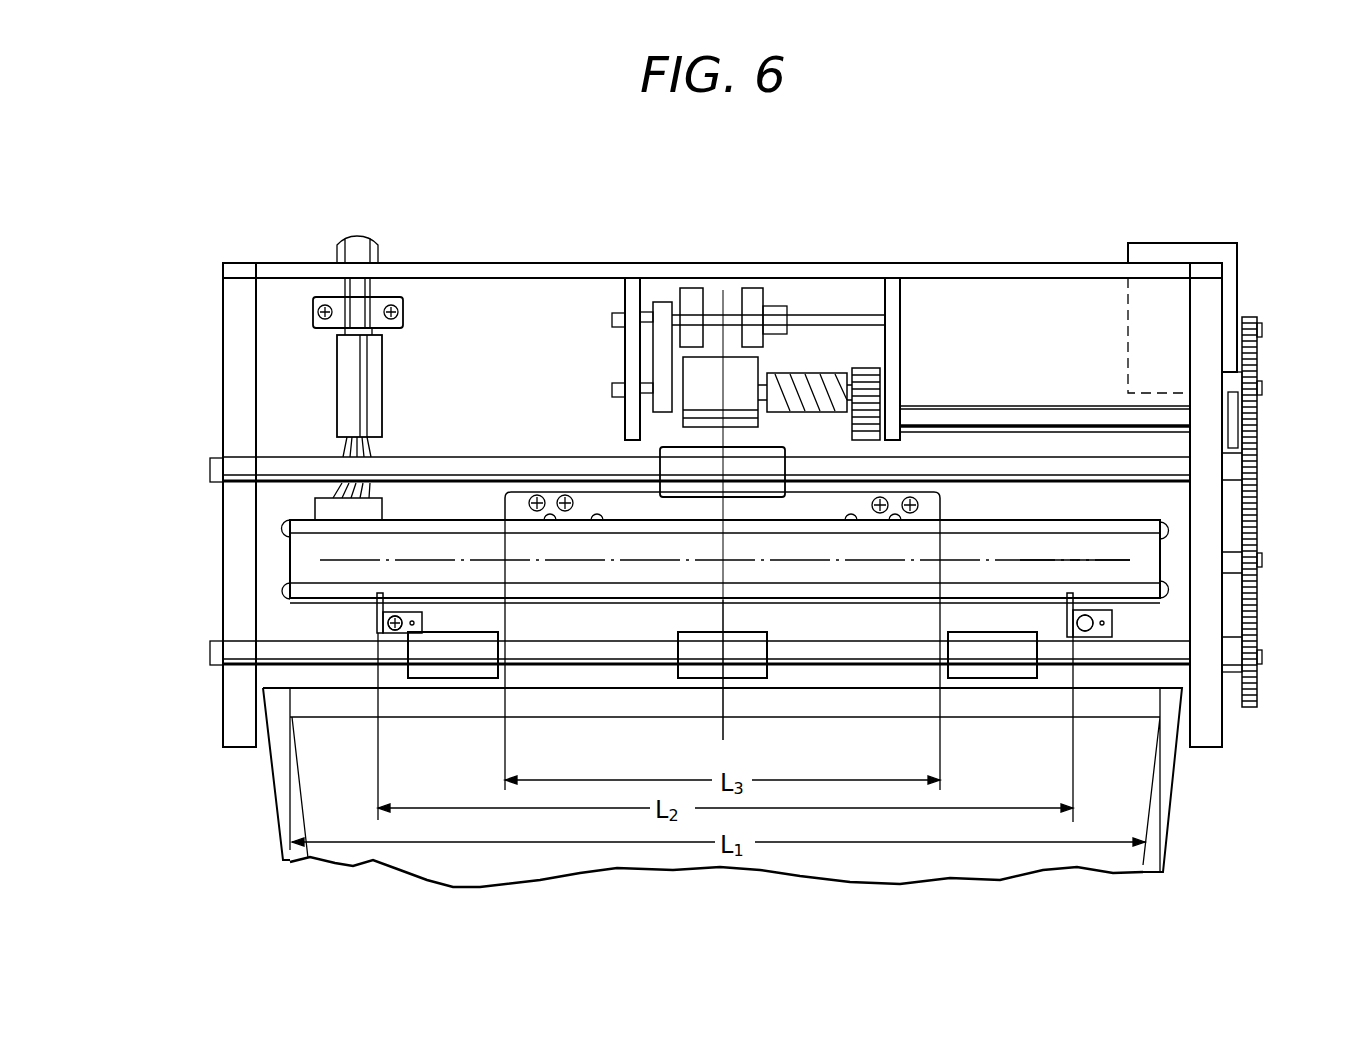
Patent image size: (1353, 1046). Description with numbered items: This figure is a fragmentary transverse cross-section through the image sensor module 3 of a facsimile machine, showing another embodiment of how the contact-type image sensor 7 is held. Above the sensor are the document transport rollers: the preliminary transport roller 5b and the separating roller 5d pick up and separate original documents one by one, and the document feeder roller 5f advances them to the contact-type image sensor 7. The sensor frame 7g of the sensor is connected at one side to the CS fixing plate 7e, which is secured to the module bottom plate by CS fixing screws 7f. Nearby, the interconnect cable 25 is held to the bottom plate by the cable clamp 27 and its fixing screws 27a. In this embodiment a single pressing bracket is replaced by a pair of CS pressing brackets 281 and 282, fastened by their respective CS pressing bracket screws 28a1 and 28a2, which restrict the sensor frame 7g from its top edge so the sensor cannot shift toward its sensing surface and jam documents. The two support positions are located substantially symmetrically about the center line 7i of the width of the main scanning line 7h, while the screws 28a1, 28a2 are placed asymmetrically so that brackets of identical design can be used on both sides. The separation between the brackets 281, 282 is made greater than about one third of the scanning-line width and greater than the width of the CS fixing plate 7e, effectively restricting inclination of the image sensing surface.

The image sensor module 3 is at (1058, 312).
The preliminary transport roller 5b is at (693, 292).
The separating roller 5d is at (710, 382).
The document feeder roller 5f is at (770, 452).
The contact-type image sensor 7 is at (297, 548).
The CS fixing plate 7e is at (605, 500).
The CS fixing screws 7f is at (565, 496).
The sensor frame 7g is at (348, 597).
The main scanning line 7h is at (1020, 560).
The center line 7i is at (730, 737).
The interconnect cable 25 is at (363, 240).
The cable clamp 27 is at (330, 298).
The fixing screws 27a is at (312, 310).
The CS pressing bracket 281 is at (372, 610).
The CS pressing bracket 282 is at (1075, 598).
The CS pressing bracket screw 28a1 is at (394, 632).
The CS pressing bracket screw 28a2 is at (1100, 637).